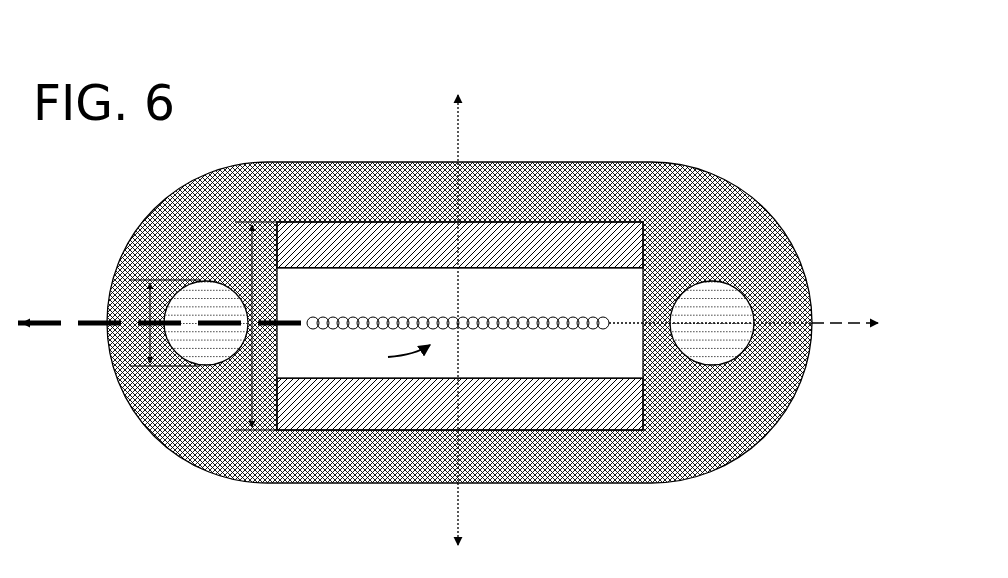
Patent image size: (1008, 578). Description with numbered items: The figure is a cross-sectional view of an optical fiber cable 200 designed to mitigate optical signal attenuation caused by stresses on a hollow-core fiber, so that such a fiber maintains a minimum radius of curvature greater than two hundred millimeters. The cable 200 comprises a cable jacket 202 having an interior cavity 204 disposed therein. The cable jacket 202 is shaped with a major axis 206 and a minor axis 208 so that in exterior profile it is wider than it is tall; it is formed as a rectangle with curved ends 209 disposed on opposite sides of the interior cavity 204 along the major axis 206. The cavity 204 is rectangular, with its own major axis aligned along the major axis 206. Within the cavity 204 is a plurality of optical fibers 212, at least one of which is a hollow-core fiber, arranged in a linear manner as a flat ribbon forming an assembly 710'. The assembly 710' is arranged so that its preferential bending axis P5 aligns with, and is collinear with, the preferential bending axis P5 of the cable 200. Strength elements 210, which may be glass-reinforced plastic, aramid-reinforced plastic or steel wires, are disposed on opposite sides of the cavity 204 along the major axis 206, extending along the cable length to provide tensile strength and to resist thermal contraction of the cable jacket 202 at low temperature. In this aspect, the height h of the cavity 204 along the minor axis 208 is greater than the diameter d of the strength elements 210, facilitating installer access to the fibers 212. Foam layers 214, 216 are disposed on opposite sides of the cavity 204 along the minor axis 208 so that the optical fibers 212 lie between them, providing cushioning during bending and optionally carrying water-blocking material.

The optical fiber cable 200 is at (455, 283).
The cable jacket 202 is at (608, 162).
The interior cavity 204 is at (630, 377).
The major axis 206 is at (835, 323).
The minor axis 208 is at (460, 505).
The curved ends 209 is at (111, 277).
The strength elements 210 is at (167, 262).
The optical fibers 212 is at (490, 318).
The foam layer 214 is at (612, 245).
The foam layer 216 is at (622, 437).
The assembly 710' is at (375, 358).
The preferential bending axis P5 is at (155, 349).